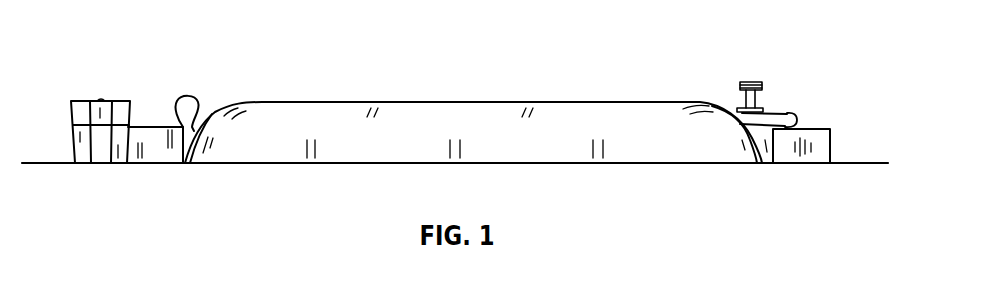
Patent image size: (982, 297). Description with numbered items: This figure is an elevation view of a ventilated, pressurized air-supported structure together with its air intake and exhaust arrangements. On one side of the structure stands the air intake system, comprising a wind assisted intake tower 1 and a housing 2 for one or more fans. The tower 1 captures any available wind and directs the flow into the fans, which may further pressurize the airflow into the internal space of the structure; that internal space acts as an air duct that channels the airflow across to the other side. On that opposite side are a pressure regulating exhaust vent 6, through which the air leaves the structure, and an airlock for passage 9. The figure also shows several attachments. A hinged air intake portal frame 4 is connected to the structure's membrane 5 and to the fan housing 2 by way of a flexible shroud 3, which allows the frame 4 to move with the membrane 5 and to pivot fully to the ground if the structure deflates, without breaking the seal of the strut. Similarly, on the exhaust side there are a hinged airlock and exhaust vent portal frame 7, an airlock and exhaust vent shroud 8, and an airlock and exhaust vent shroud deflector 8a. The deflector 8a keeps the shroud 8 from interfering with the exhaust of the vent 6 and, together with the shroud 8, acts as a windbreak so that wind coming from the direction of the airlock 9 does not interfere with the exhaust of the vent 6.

The wind assisted intake tower 1 is at (94, 101).
The housing 2 is at (155, 126).
The flexible shroud 3 is at (186, 98).
The air intake portal frame 4 is at (207, 120).
The membrane 5 is at (473, 102).
The pressure regulating exhaust vent 6 is at (758, 108).
The airlock and exhaust vent portal frame 7 is at (740, 140).
The airlock and exhaust vent shroud 8 is at (788, 114).
The airlock and exhaust vent shroud deflector 8a is at (765, 112).
The airlock for passage 9 is at (822, 129).